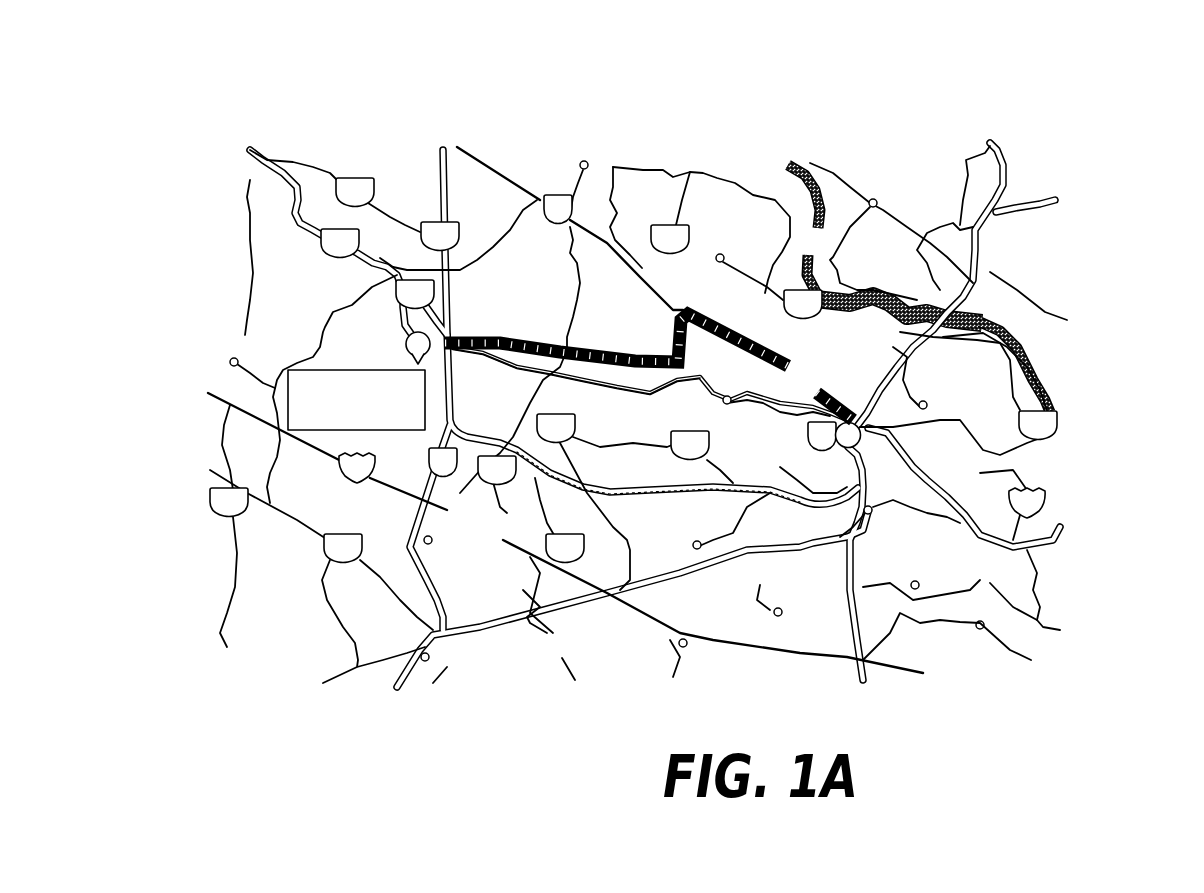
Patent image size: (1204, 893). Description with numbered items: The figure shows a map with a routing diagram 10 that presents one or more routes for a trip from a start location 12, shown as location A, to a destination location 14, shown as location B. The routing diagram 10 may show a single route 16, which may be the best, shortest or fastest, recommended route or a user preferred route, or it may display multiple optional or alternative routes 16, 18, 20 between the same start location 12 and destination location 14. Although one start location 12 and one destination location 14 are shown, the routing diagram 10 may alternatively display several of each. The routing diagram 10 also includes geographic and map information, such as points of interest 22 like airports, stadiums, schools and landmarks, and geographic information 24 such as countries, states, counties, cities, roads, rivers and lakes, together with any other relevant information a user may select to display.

The routing diagram 10 is at (970, 121).
The start location 12 is at (408, 333).
The destination location 14 is at (1057, 434).
The route 16 is at (505, 338).
The route 18 is at (713, 316).
The route 20 is at (623, 490).
The points of interest 22 is at (290, 402).
The geographic information 24 is at (1031, 660).